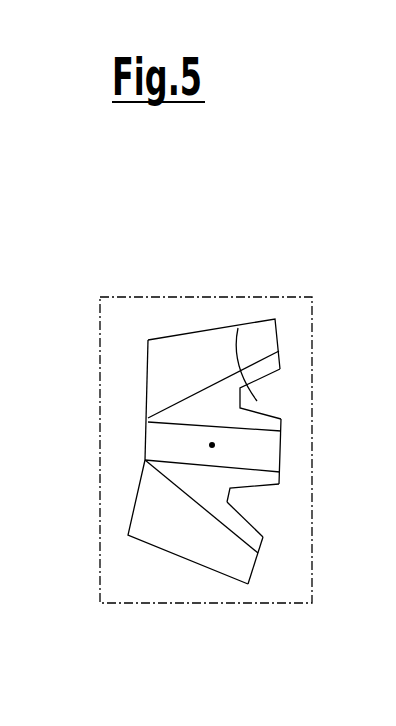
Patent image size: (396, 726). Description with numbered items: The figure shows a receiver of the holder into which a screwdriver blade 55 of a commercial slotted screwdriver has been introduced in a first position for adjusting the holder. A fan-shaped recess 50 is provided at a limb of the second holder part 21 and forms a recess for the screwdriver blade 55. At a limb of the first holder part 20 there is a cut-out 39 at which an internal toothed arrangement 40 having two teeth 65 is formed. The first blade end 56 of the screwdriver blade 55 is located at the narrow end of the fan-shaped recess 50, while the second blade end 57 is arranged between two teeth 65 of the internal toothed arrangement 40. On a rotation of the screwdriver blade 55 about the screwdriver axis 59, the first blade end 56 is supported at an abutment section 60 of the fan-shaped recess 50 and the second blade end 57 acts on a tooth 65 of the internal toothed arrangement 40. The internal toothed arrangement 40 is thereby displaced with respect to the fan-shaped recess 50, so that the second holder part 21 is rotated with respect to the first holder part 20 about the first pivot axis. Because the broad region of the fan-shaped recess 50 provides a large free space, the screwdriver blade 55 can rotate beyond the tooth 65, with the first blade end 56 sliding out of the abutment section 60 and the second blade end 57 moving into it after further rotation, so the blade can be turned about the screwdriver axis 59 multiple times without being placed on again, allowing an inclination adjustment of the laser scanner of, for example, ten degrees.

The first holder part 20 is at (142, 305).
The second holder part 21 is at (165, 527).
The cut-out 39 is at (259, 326).
The internal toothed arrangement 40 is at (298, 386).
The fan-shaped recess 50 is at (215, 488).
The screwdriver blade 55 is at (180, 442).
The first blade end 56 is at (167, 430).
The second blade end 57 is at (290, 466).
The screwdriver axis 59 is at (182, 466).
The abutment section 60 is at (125, 479).
The tooth 65 is at (238, 328).